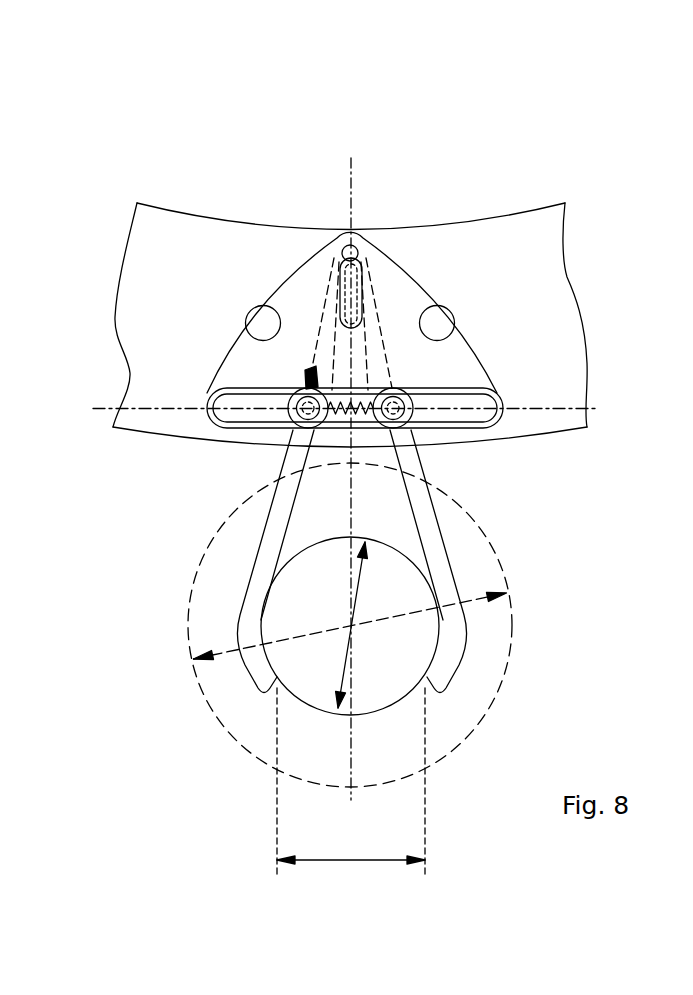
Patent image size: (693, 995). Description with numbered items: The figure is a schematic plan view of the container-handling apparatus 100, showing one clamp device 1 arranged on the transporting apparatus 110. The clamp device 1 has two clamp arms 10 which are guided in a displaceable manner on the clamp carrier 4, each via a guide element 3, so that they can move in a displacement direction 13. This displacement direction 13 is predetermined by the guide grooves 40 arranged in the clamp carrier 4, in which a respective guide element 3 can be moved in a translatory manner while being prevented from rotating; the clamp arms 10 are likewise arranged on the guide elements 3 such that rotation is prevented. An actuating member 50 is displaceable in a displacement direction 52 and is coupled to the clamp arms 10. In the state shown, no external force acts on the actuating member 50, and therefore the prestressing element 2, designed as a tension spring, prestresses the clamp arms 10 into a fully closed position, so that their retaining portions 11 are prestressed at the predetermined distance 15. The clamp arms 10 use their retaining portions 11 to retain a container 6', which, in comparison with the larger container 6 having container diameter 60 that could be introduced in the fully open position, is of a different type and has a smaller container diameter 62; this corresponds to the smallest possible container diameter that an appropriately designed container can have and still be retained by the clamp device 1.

The container-handling apparatus 100 is at (87, 150).
The clamp device 1 is at (183, 173).
The prestressing element 2 is at (307, 372).
The guide element 3 is at (393, 390).
The clamp carrier 4 is at (403, 297).
The container 6 is at (372, 625).
The container 6' is at (350, 647).
The clamp arm 10 is at (267, 573).
The retaining portion 11 is at (432, 630).
The displacement direction 13 is at (99, 407).
The distance 15 is at (347, 862).
The guide groove 40 is at (483, 407).
The actuating member 50 is at (358, 256).
The displacement direction 52 is at (352, 175).
The container diameter 60 is at (312, 635).
The container diameter 62 is at (353, 640).
The transporting apparatus 110 is at (582, 285).